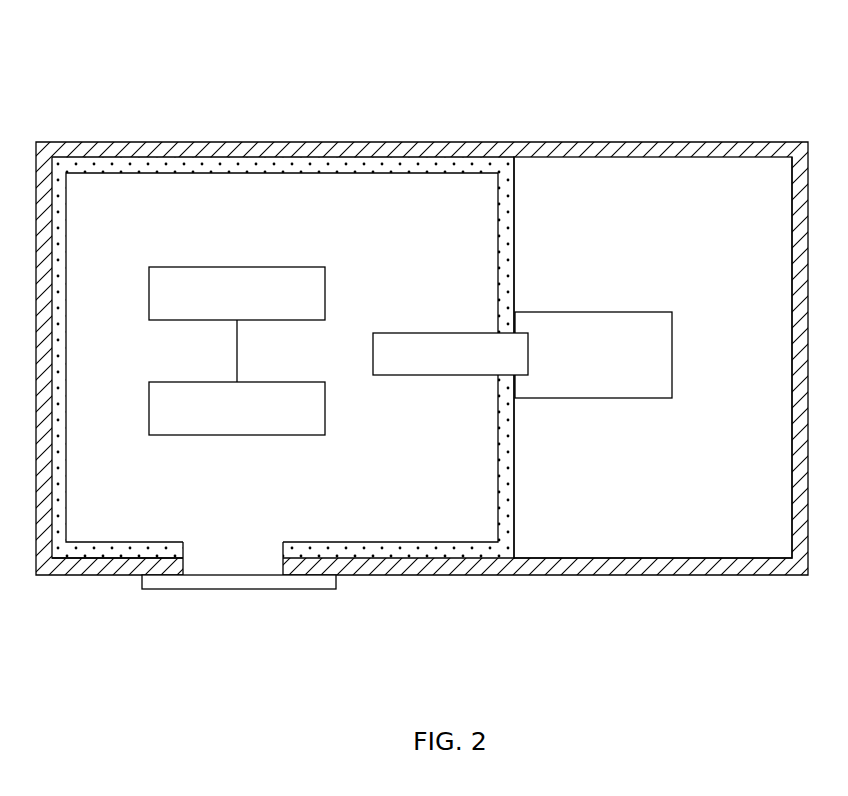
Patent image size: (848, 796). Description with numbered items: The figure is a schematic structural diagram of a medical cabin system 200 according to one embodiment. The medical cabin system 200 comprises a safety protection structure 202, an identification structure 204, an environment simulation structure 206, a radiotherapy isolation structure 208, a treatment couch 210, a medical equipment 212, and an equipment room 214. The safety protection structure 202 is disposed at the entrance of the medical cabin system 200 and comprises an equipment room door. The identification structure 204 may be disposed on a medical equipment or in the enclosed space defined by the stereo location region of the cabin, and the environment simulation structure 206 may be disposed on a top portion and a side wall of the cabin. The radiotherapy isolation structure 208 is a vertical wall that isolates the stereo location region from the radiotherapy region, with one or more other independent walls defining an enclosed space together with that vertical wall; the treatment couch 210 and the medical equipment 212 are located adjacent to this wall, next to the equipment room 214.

The medical cabin system 200 is at (419, 296).
The safety protection structure 202 is at (250, 589).
The identification structure 204 is at (253, 267).
The environment simulation structure 206 is at (258, 382).
The radiotherapy isolation structure 208 is at (498, 405).
The treatment couch 210 is at (440, 333).
The medical equipment 212 is at (588, 312).
The equipment room 214 is at (663, 540).